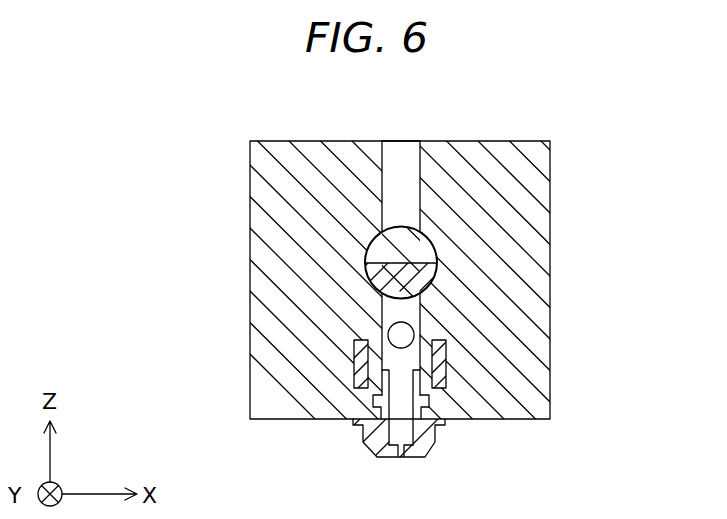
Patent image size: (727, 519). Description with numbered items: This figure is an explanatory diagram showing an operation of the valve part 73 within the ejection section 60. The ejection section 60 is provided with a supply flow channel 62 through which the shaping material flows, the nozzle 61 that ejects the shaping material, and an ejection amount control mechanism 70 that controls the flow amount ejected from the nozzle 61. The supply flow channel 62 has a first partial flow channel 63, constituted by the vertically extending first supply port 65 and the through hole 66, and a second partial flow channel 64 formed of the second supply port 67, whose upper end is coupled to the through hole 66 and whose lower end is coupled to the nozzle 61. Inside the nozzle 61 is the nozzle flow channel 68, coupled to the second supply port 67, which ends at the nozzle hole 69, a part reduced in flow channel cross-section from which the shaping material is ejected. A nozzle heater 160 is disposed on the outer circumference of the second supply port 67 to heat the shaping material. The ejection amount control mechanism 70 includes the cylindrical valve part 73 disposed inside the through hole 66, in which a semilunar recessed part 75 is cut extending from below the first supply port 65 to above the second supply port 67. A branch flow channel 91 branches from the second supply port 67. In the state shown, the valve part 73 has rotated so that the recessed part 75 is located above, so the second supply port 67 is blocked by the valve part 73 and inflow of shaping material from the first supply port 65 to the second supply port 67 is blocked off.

The ejection section 60 is at (398, 259).
The nozzle 61 is at (378, 426).
The supply flow channel 62 is at (481, 259).
The first partial flow channel 63 is at (633, 187).
The second partial flow channel 64 is at (534, 268).
The first supply port 65 is at (420, 198).
The through hole 66 is at (432, 244).
The second supply port 67 is at (420, 322).
The nozzle flow channel 68 is at (421, 408).
The nozzle hole 69 is at (401, 457).
The ejection amount control mechanism 70 is at (353, 264).
The valve part 73 is at (402, 272).
The recessed part 75 is at (395, 258).
The branch flow channel 91 is at (388, 335).
The nozzle heater 160 is at (353, 380).